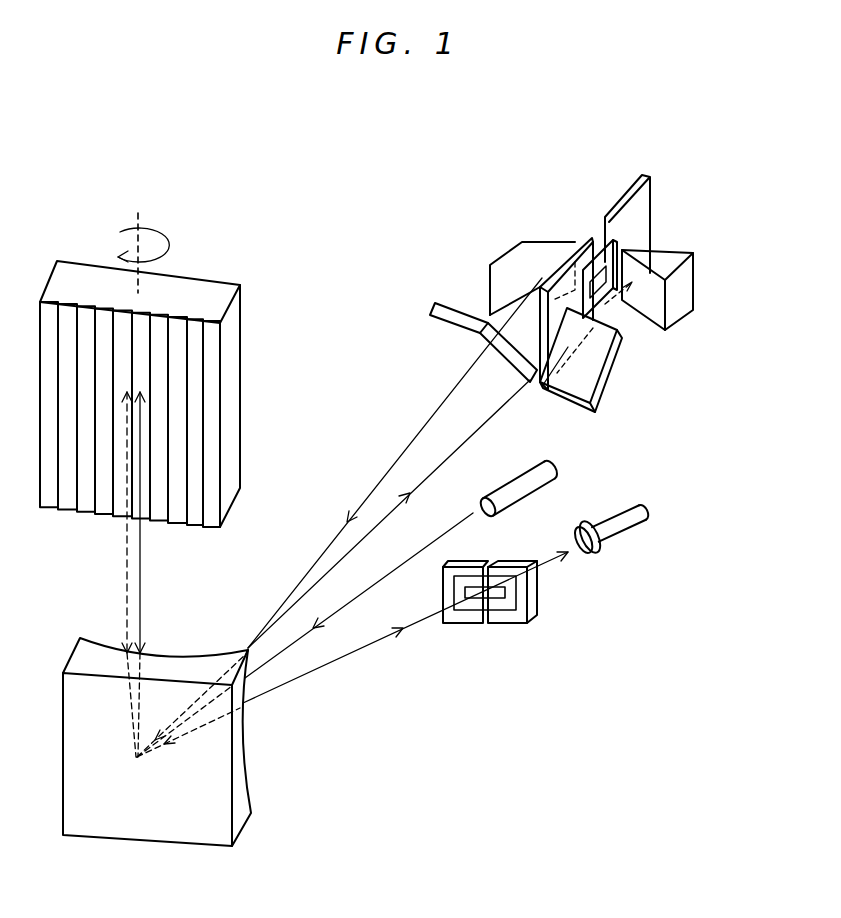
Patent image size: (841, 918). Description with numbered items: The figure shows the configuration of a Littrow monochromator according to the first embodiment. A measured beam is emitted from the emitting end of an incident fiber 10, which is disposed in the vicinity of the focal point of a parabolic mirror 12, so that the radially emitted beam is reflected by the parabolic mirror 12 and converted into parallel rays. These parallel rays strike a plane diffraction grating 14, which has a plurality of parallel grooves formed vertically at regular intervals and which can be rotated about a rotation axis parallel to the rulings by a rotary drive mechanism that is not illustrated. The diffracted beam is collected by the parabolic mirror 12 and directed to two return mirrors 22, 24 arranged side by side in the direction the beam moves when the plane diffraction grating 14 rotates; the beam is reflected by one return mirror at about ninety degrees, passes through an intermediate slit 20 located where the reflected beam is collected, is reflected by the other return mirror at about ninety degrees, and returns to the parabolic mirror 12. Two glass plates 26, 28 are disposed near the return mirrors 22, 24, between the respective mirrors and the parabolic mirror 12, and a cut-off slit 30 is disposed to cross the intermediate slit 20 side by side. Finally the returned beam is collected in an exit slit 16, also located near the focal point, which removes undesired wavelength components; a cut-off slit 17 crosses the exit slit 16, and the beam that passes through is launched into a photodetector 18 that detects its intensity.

The incident fiber 10 is at (556, 467).
The parabolic mirror 12 is at (240, 780).
The plane diffraction grating 14 is at (180, 288).
The exit slit 16 is at (557, 658).
The cut-off slit 17 is at (502, 605).
The photodetector 18 is at (640, 518).
The intermediate slit 20 is at (640, 192).
The return mirror 22 is at (680, 282).
The return mirror 24 is at (518, 248).
The glass plate 26 is at (590, 373).
The glass plate 28 is at (435, 302).
The cut-off slit 30 is at (617, 240).